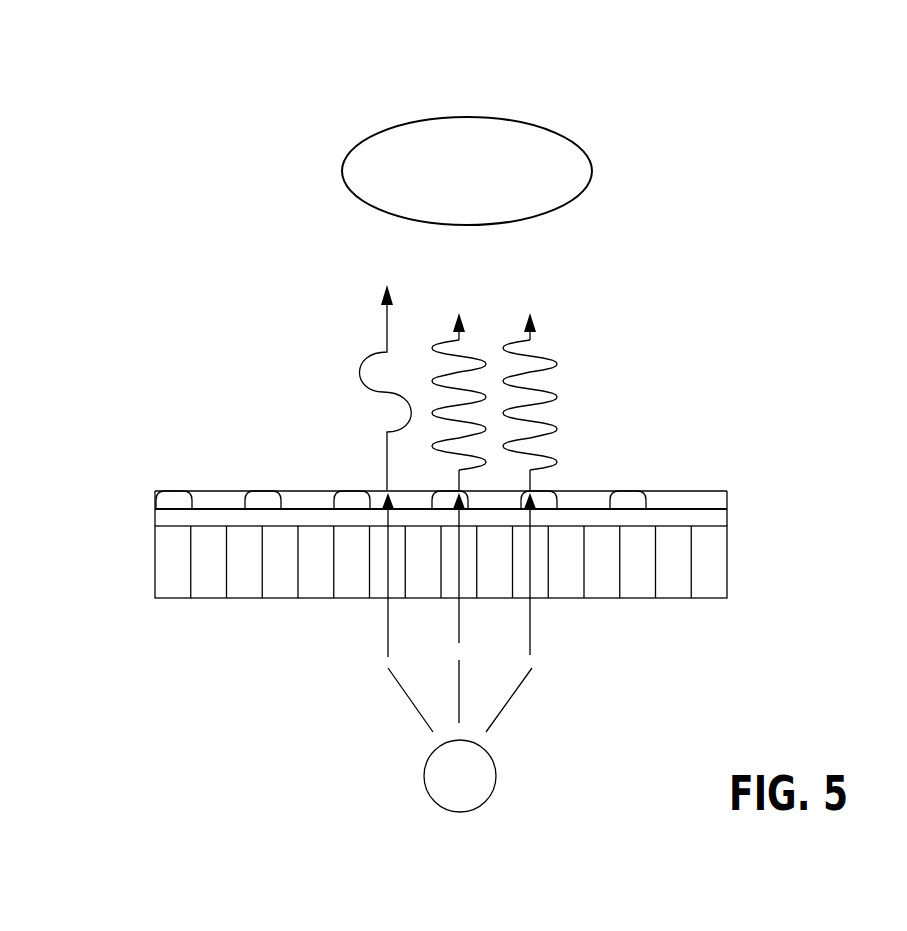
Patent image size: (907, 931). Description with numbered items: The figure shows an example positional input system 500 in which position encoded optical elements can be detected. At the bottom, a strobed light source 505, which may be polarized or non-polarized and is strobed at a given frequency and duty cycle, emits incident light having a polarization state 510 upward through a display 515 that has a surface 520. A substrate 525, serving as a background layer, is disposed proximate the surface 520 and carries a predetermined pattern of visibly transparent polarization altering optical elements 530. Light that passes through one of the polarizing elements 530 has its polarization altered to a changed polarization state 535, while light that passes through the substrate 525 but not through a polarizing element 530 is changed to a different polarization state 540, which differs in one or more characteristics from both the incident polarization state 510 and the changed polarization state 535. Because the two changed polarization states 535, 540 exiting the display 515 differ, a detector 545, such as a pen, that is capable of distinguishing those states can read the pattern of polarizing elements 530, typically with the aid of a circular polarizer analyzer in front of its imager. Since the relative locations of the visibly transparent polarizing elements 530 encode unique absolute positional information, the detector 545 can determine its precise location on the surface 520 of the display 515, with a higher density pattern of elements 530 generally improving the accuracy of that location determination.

The positional input system 500 is at (178, 66).
The strobed light source 505 is at (495, 777).
The polarization state 510 is at (530, 623).
The display 515 is at (728, 568).
The surface 520 is at (675, 528).
The substrate 525 is at (223, 500).
The visibly transparent polarization altering optical elements 530 is at (545, 500).
The changed polarization state 535 is at (557, 360).
The changed polarization state 540 is at (368, 357).
The detector 545 is at (592, 170).